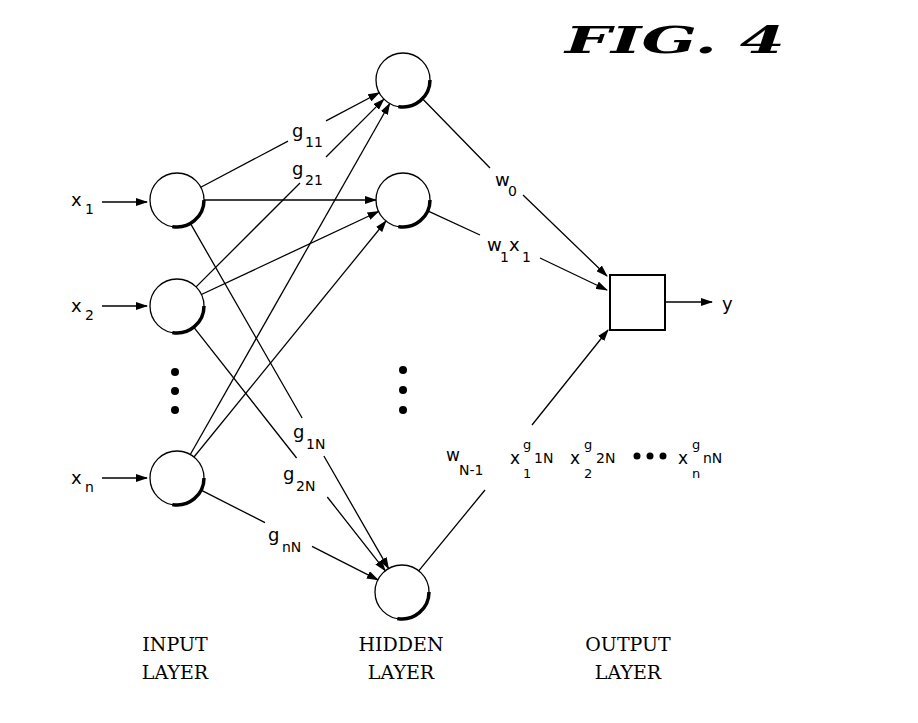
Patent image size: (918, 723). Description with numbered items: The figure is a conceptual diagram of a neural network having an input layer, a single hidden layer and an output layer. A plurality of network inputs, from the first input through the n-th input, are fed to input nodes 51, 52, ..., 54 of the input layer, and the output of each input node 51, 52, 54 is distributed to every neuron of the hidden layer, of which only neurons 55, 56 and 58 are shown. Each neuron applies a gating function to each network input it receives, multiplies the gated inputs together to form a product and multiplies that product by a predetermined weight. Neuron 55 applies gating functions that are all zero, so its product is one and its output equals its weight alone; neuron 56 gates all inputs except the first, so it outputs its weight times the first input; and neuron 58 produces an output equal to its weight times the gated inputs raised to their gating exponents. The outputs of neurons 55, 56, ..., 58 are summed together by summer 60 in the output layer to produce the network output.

The input node 51 is at (156, 181).
The input node 52 is at (156, 287).
The input node 54 is at (156, 459).
The neuron 55 is at (428, 65).
The neuron 56 is at (413, 229).
The neuron 58 is at (404, 565).
The summer 60 is at (648, 273).